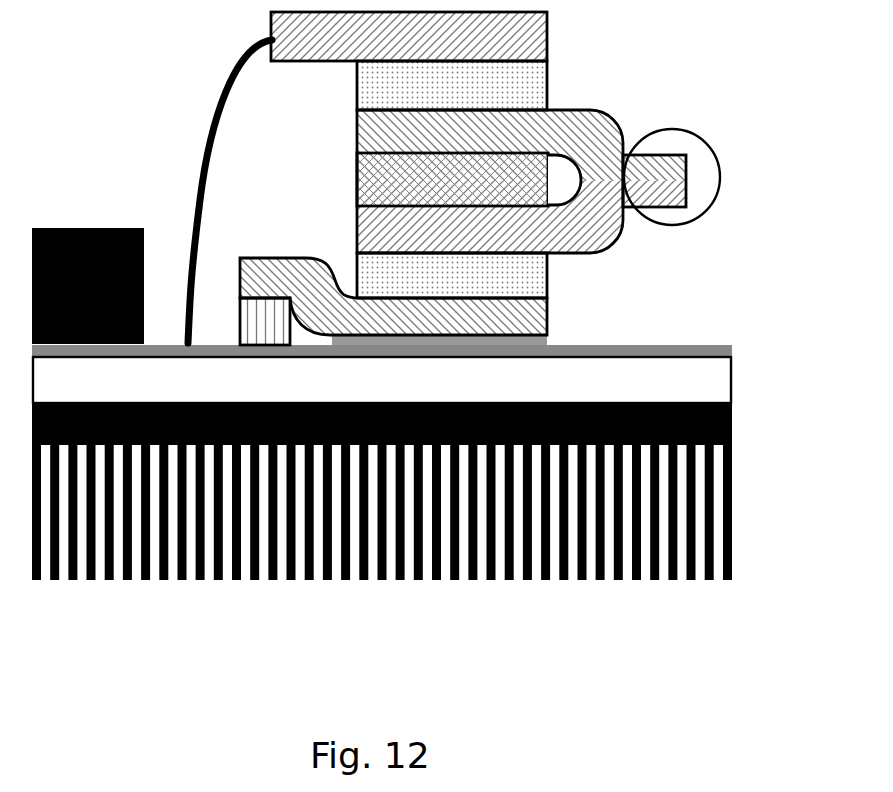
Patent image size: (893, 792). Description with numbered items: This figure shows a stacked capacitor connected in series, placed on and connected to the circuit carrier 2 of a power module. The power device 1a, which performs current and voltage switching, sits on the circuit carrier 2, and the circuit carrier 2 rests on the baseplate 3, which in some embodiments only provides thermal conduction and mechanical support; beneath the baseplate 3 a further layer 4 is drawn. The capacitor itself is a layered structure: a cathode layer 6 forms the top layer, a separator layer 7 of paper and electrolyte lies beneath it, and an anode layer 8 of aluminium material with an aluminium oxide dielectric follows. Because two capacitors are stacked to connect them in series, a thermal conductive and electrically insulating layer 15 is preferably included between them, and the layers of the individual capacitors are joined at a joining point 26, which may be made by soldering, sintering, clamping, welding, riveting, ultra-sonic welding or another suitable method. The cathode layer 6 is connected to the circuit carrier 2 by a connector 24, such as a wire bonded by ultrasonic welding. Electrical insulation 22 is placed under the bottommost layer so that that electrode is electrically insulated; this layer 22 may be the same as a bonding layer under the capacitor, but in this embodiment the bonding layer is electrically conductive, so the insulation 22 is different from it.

The power device 1a is at (73, 228).
The circuit carrier 2 is at (731, 348).
The baseplate 3 is at (717, 375).
The heat sink 4 is at (732, 430).
The cathode layer 6 is at (547, 40).
The separator layer 7 is at (547, 83).
The anode layer 8 is at (575, 110).
The thermal conductive and electrically insulating layer 15 is at (357, 183).
The electrical insulation 22 is at (547, 340).
The connector 24 is at (243, 45).
The joining point 26 is at (707, 118).